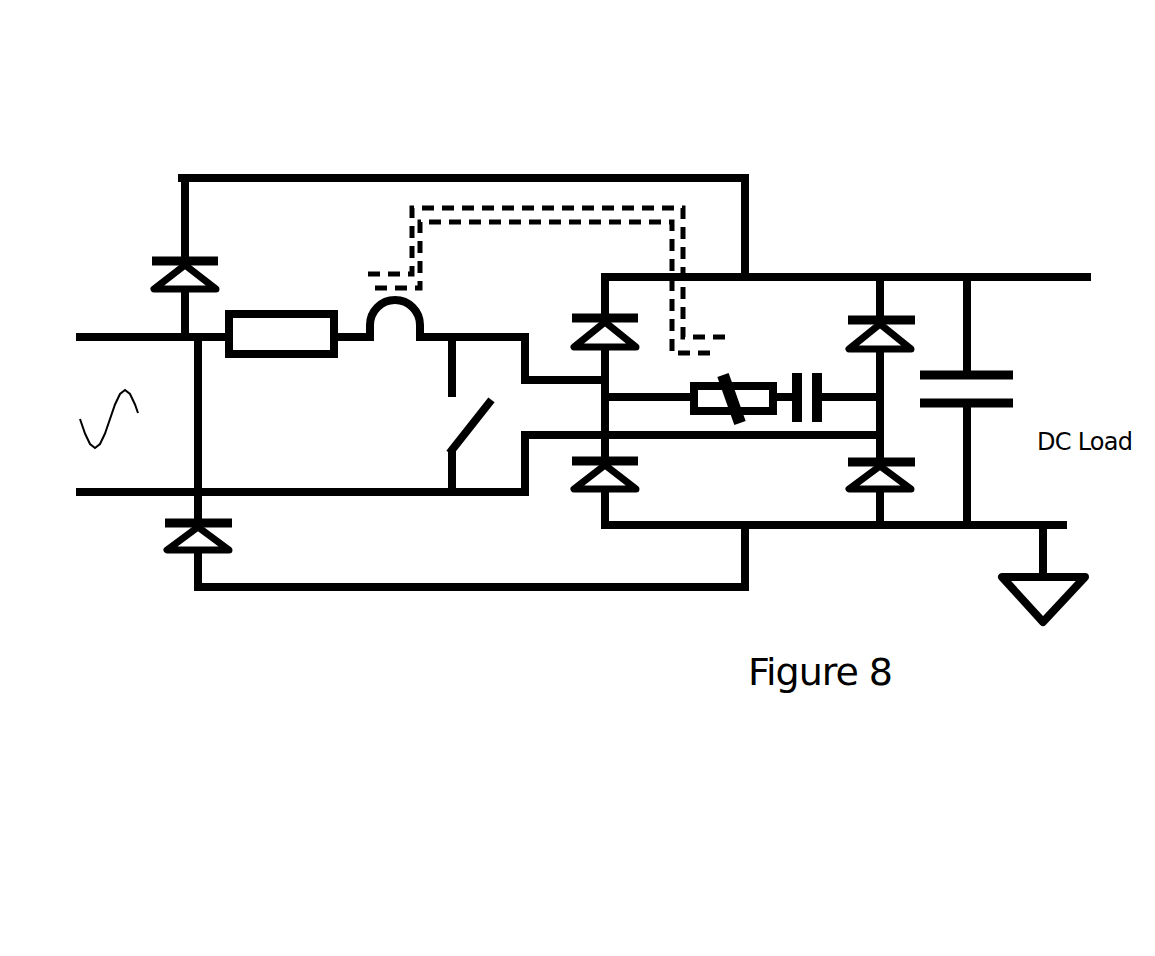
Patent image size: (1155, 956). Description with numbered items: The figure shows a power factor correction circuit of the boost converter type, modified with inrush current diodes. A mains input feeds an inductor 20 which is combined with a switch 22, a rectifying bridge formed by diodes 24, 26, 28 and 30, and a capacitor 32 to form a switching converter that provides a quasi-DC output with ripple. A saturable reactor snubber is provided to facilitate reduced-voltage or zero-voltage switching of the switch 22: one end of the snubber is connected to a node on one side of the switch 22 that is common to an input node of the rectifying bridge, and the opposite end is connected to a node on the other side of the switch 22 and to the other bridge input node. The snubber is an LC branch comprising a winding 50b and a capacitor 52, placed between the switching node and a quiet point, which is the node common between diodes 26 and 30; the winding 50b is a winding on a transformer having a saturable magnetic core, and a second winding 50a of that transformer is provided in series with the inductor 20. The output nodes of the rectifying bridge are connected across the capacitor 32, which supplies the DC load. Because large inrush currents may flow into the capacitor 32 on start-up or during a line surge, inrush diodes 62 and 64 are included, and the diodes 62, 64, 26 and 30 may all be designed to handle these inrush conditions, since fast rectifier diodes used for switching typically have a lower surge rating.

The inductor 20 is at (265, 307).
The switch 22 is at (465, 407).
The rectifying bridge diode 24 is at (558, 338).
The rectifying bridge diode 26 is at (838, 337).
The rectifying bridge diode 28 is at (562, 502).
The rectifying bridge diode 30 is at (833, 487).
The capacitor 32 is at (1020, 388).
The second winding 50a is at (395, 333).
The winding 50b is at (742, 365).
The capacitor 52 is at (827, 380).
The inrush diode 62 is at (210, 283).
The inrush diode 64 is at (233, 552).